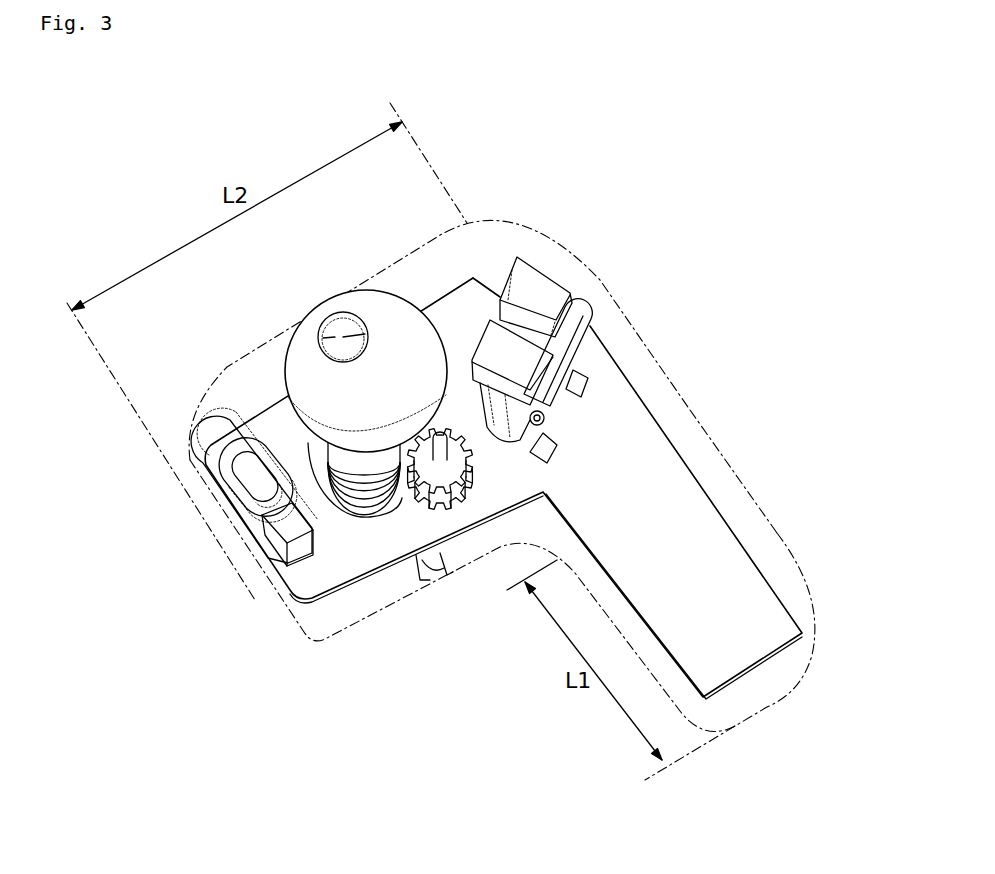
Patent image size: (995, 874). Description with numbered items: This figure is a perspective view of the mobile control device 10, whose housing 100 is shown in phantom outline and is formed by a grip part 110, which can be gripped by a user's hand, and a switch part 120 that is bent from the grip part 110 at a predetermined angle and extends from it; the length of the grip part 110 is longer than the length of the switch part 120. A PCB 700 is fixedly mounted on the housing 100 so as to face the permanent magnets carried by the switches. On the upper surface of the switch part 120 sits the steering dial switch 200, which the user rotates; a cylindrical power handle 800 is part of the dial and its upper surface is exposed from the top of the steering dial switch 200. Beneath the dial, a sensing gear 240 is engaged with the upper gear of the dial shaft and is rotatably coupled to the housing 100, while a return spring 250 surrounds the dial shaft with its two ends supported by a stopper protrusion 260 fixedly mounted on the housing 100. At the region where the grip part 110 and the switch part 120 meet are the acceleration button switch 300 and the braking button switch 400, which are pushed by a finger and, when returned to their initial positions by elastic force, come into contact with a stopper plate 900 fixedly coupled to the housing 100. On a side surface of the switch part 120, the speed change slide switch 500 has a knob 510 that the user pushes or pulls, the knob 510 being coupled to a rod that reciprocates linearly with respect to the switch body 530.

The mobile control device 10 is at (530, 230).
The housing 100 is at (700, 394).
The grip part 110 is at (773, 540).
The switch part 120 is at (227, 397).
The steering dial switch 200 is at (303, 363).
The sensing gear 240 is at (460, 510).
The return spring 250 is at (362, 505).
The stopper protrusion 260 is at (428, 578).
The acceleration button switch 300 is at (518, 362).
The braking button switch 400 is at (537, 293).
The speed change slide switch 500 is at (228, 496).
The knob 510 is at (248, 470).
The switch body 530 is at (288, 527).
The PCB 700 is at (680, 500).
The power handle 800 is at (343, 325).
The stopper plate 900 is at (578, 325).